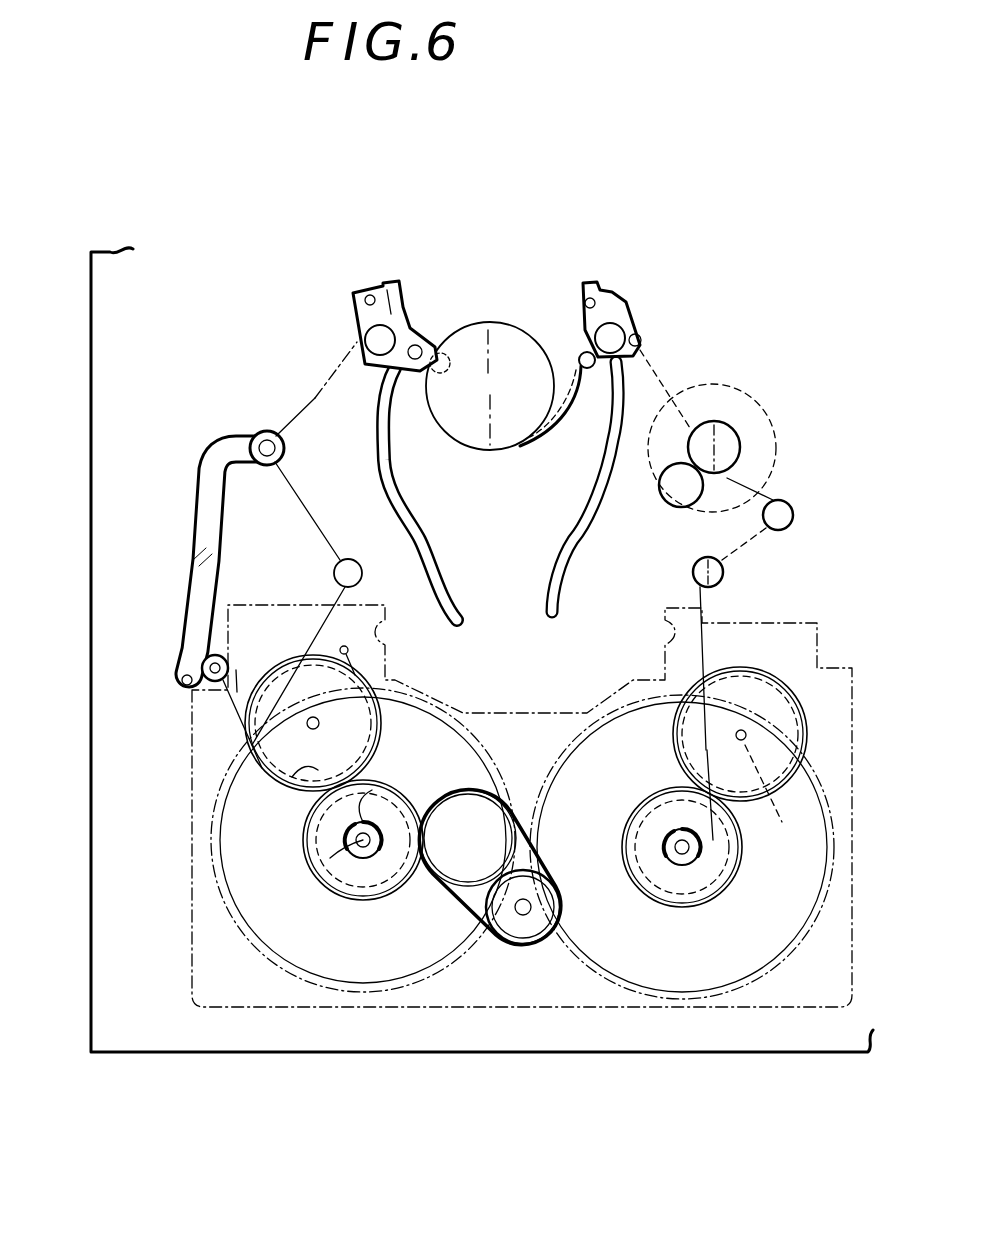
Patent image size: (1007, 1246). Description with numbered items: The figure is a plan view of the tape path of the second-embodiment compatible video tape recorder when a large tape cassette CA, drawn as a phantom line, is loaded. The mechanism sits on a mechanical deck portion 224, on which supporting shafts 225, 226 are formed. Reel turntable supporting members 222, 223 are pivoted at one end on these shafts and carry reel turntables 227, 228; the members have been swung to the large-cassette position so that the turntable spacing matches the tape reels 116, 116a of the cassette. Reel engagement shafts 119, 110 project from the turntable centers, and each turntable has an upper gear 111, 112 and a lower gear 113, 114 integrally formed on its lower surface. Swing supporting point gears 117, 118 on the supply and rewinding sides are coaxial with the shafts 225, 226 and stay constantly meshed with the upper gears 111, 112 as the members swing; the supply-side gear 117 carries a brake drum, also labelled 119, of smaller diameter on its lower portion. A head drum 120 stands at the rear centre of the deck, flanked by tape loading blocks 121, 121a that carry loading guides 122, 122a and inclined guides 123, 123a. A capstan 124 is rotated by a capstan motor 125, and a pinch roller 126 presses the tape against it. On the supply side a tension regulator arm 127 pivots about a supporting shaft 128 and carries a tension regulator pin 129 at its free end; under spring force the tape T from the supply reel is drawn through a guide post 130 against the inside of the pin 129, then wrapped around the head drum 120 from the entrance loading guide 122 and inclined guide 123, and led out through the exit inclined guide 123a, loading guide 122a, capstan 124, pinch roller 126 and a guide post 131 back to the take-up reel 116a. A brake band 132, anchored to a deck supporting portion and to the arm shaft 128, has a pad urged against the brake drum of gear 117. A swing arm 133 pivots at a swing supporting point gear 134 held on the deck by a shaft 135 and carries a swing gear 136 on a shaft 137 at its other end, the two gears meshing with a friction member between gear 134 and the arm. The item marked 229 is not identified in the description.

The reel engagement shaft 110 is at (632, 760).
The reel turntable upper gear 111 is at (356, 900).
The reel turntable upper gear 112 is at (740, 860).
The reel turntable lower gear 113 is at (322, 890).
The reel turntable lower gear 114 is at (690, 900).
The tape reel 116 is at (252, 945).
The tape reel 116a is at (815, 920).
The swing supporting point gear on the tape supply side 117 is at (292, 777).
The swing supporting point gear on the tape rewinding side 118 is at (735, 680).
The reel engagement shaft 119 is at (252, 752).
The head drum 120 is at (517, 325).
The tape loading block 121 is at (395, 290).
The tape loading block 121a is at (620, 292).
The loading guide 122 is at (365, 340).
The loading guide 122a is at (643, 340).
The inclined guide 123 is at (440, 353).
The inclined guide 123a is at (585, 350).
The capstan 124 is at (714, 440).
The capstan motor 125 is at (770, 425).
The pinch roller 126 is at (663, 492).
The tension regulator arm 127 is at (199, 497).
The supporting shaft 128 is at (214, 684).
The tension regulator pin 129 is at (285, 448).
The guide post 130 is at (349, 562).
The guide post 131 is at (724, 572).
The brake band 132 is at (236, 684).
The swing arm 133 is at (472, 897).
The swing supporting point gear 134 is at (556, 942).
The shaft 135 is at (520, 916).
The swing gear 136 is at (365, 830).
The shaft 137 is at (468, 830).
The reel turntable supporting member 222 is at (318, 856).
The reel turntable supporting member 223 is at (760, 775).
The mechanical deck portion 224 is at (91, 725).
The supporting shaft 225 is at (312, 718).
The supporting shaft 226 is at (746, 733).
The reel turntable 227 is at (330, 858).
The reel turntable 228 is at (665, 880).
The tape reel outline 229 is at (390, 697).
The tape T is at (297, 400).
The large tape cassette CA is at (855, 895).